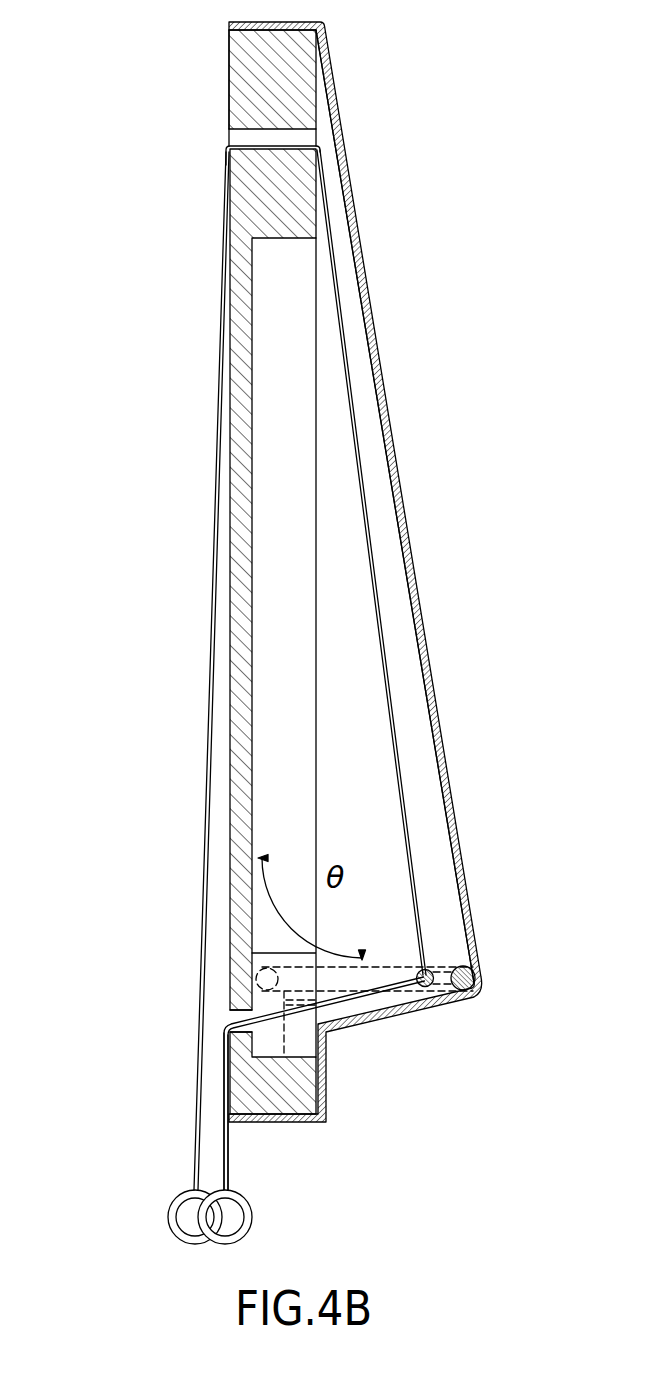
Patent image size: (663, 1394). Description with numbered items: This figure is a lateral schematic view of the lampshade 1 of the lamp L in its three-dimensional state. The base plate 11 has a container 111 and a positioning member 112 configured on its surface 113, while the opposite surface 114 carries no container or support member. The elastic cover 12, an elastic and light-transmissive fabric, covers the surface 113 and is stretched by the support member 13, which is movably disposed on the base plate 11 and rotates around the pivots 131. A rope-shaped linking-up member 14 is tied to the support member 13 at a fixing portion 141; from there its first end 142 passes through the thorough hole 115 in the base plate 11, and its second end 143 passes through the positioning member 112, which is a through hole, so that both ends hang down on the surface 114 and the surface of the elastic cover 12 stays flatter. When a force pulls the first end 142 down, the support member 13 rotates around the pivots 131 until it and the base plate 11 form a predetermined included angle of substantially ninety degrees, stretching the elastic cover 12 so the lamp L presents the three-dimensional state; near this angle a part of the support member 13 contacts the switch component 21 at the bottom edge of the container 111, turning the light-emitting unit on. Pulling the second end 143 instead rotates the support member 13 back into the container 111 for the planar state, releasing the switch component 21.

The lampshade 1 is at (338, 42).
The base plate 11 is at (287, 93).
The container 111 is at (276, 308).
The positioning member 112 is at (243, 136).
The surface 113 is at (318, 197).
The surface 114 is at (230, 82).
The thorough hole 115 is at (226, 1018).
The elastic cover 12 is at (373, 325).
The support member 13 is at (368, 977).
The pivot 131 is at (256, 979).
The linking-up member 14 is at (357, 442).
The fixing portion 141 is at (428, 972).
The first end 142 is at (228, 1170).
The second end 143 is at (198, 1160).
The switch component 21 is at (298, 1048).
The lamp L is at (128, 78).